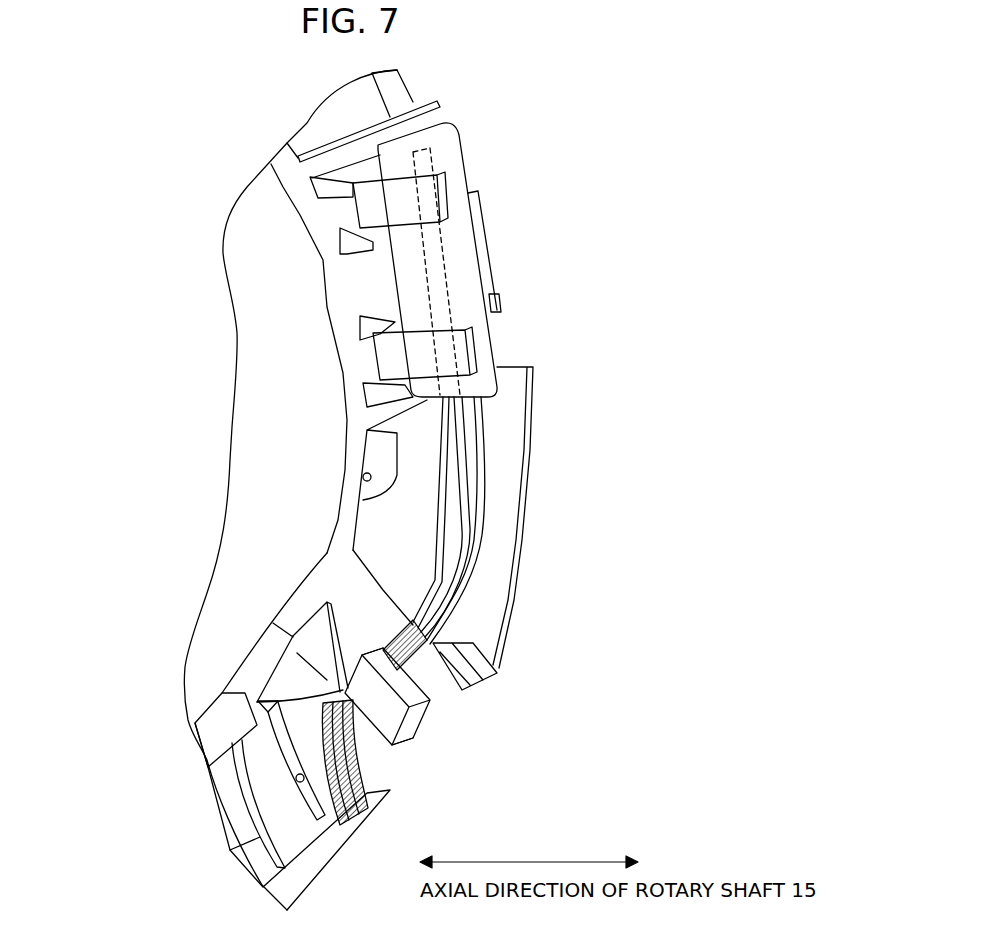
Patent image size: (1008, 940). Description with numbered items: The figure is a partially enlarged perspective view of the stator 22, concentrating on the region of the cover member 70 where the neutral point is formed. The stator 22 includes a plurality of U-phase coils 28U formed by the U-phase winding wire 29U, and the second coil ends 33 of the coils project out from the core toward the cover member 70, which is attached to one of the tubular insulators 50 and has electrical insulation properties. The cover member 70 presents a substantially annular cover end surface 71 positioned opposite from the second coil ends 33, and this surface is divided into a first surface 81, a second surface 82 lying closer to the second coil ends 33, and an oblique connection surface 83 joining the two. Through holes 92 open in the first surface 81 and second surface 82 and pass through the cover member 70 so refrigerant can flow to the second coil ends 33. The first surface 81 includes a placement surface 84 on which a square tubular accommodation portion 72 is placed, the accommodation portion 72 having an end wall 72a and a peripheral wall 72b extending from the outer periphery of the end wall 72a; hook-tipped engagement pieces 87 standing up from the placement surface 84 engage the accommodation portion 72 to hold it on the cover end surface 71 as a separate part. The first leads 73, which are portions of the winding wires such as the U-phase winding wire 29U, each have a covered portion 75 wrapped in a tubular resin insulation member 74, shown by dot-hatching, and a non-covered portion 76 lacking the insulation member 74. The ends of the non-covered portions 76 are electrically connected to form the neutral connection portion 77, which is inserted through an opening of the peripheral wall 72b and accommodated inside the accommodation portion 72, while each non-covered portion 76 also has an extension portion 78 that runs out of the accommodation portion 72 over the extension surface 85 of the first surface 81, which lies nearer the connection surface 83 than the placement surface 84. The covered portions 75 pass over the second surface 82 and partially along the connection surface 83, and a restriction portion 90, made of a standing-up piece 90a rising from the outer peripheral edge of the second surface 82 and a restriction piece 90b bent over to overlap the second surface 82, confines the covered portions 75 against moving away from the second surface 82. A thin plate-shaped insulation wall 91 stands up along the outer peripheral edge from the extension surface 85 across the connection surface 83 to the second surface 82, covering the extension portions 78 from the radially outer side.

The stator 22 is at (535, 180).
The U-phase coils 28U is at (240, 822).
The U-phase winding wire 29U is at (465, 596).
The second coil ends 33 is at (288, 677).
The insulators 50 is at (330, 867).
The cover member 70 is at (268, 440).
The cover end surface 71 is at (345, 510).
The accommodation portion 72 is at (462, 155).
The end wall 72a is at (418, 125).
The peripheral wall 72b is at (498, 300).
The first leads 73 is at (480, 443).
The insulation member 74 is at (452, 685).
The covered portion 75 is at (325, 752).
The non-covered portion 76 is at (490, 540).
The neutral connection portion 77 is at (452, 268).
The extension portion 78 is at (466, 523).
The first surface 81 is at (345, 445).
The second surface 82 is at (275, 645).
The connection surface 83 is at (305, 598).
The placement surface 84 is at (333, 293).
The extension surface 85 is at (340, 530).
The engagement pieces 87 is at (448, 213).
The restriction portion 90 is at (425, 727).
The standing-up piece 90a is at (397, 768).
The restriction piece 90b is at (372, 652).
The insulation wall 91 is at (525, 568).
The through holes 92 is at (362, 477).